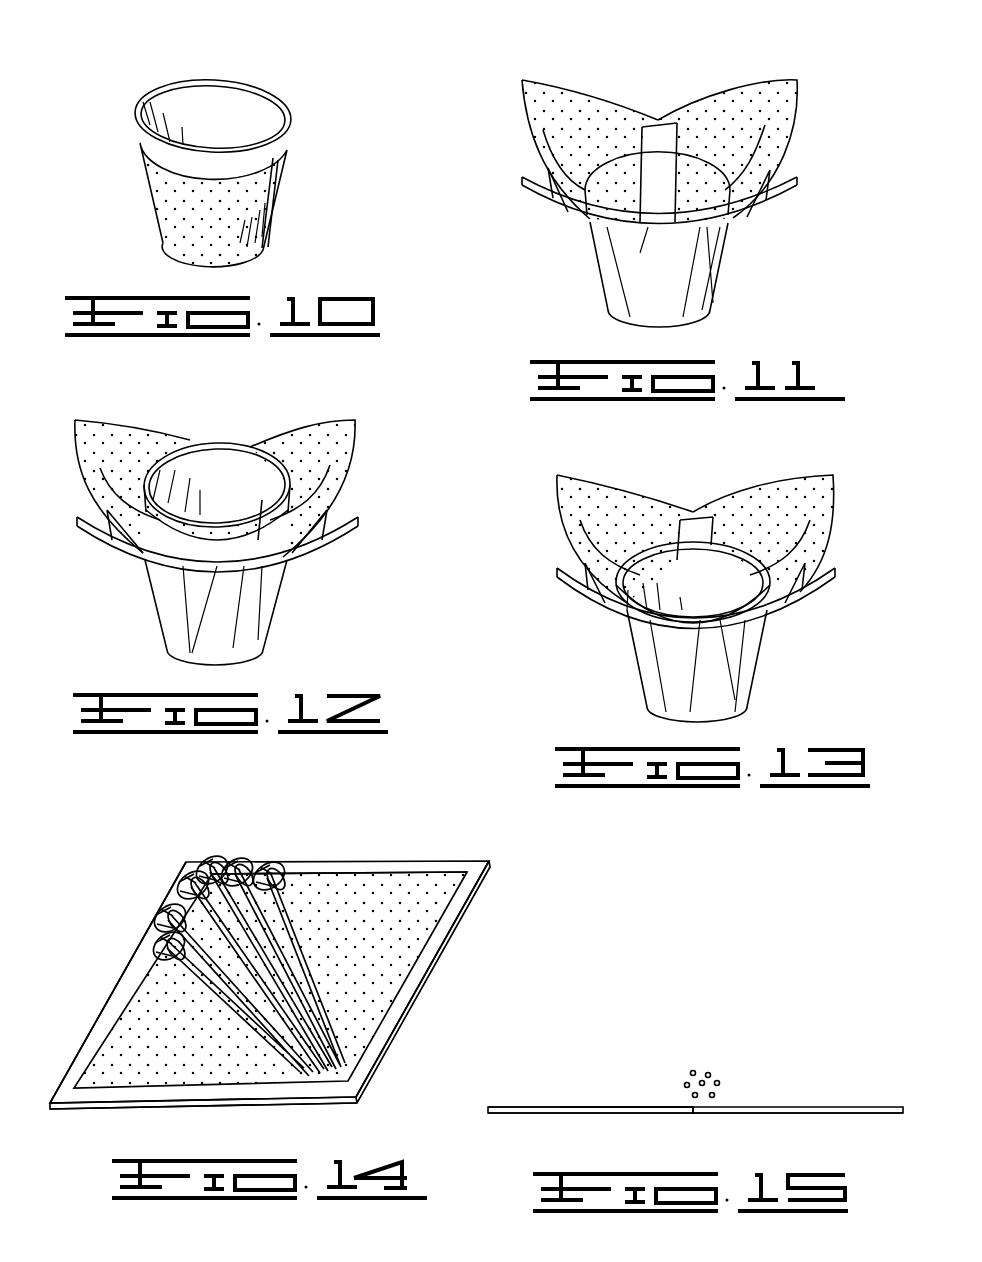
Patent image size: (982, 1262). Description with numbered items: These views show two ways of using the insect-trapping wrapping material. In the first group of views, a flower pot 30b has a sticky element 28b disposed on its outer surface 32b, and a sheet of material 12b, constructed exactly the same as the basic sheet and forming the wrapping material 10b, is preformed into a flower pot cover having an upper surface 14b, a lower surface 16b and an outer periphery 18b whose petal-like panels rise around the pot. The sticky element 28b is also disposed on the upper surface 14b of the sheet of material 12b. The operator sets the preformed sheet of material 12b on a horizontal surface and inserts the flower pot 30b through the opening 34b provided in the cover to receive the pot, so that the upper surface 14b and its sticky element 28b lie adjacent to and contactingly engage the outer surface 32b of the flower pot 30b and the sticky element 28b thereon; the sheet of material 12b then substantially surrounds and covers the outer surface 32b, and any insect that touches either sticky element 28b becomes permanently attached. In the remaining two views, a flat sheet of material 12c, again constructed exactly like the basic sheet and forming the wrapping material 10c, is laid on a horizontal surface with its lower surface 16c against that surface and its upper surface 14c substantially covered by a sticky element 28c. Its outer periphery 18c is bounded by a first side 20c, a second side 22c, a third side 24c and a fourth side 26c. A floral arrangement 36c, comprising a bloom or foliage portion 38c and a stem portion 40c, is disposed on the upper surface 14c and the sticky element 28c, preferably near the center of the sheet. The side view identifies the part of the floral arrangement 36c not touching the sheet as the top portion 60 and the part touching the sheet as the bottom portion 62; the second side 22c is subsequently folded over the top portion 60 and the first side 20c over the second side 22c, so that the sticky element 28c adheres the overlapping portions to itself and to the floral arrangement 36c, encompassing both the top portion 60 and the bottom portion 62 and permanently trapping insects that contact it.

In FIG. 11, the floral grouping / pot cover assembly 10b is at (686, 177).
In FIG. 12, the floral grouping / pot cover assembly 10b is at (244, 515).
In FIG. 13, the floral grouping / pot cover assembly 10b is at (700, 570).
In FIG. 11, the sheet of material 12b is at (686, 126).
In FIG. 12, the sheet of material 12b is at (244, 471).
In FIG. 13, the sheet of material 12b is at (722, 524).
In FIG. 11, the upper surface 14b is at (790, 105).
In FIG. 12, the upper surface 14b is at (348, 443).
In FIG. 13, the upper surface 14b is at (827, 502).
In FIG. 11, the flower pot / container 16b is at (693, 268).
In FIG. 12, the flower pot / container 16b is at (245, 623).
In FIG. 13, the flower pot / container 16b is at (725, 680).
In FIG. 11, the petal panel of cover 18b is at (588, 90).
In FIG. 12, the petal panel of cover 18b is at (145, 430).
In FIG. 13, the petal panel of cover 18b is at (620, 482).
In FIG. 10, the sticky element 28b is at (178, 196).
In FIG. 11, the sticky element 28b is at (743, 163).
In FIG. 12, the sticky element 28b is at (300, 498).
In FIG. 13, the sticky element 28b is at (793, 540).
In FIG. 10, the flower pot 30b is at (247, 190).
In FIG. 12, the flower pot 30b is at (268, 495).
In FIG. 13, the flower pot 30b is at (693, 574).
In FIG. 10, the outer surface 32b is at (240, 223).
In FIG. 12, the outer surface 32b is at (268, 573).
In FIG. 10, the rim / opening of cup 34b is at (257, 108).
In FIG. 12, the rim / opening of cup 34b is at (217, 460).
In FIG. 13, the rim / opening of cup 34b is at (740, 587).
In FIG. 14, the floral grouping sheet assembly 10c is at (291, 959).
In FIG. 15, the floral grouping sheet assembly 10c is at (673, 1059).
In FIG. 14, the sheet of material 12c is at (291, 974).
In FIG. 15, the sheet of material 12c is at (901, 1092).
In FIG. 14, the upper surface 14c is at (470, 877).
In FIG. 15, the upper surface 14c is at (492, 1107).
In FIG. 15, the lower surface 16c is at (520, 1113).
In FIG. 14, the lower edge of sheet 18c is at (142, 1109).
In FIG. 14, the first side 20c is at (416, 993).
In FIG. 15, the first side 20c is at (778, 1113).
In FIG. 14, the second side 22c is at (133, 953).
In FIG. 14, the bottom edge of second sheet 24c is at (130, 1107).
In FIG. 15, the bottom edge of second sheet 24c is at (595, 1113).
In FIG. 14, the upper edge of sheet 26c is at (326, 862).
In FIG. 14, the sticky element 28c is at (377, 958).
In FIG. 15, the sticky element 28c is at (627, 1107).
In FIG. 14, the floral arrangement 36c is at (247, 975).
In FIG. 14, the bloom or foliage portion 38c is at (176, 828).
In FIG. 14, the stem portion 40c is at (292, 1070).
In FIG. 15, the top portion 60 is at (703, 1057).
In FIG. 15, the bottom portion 62 is at (720, 1083).